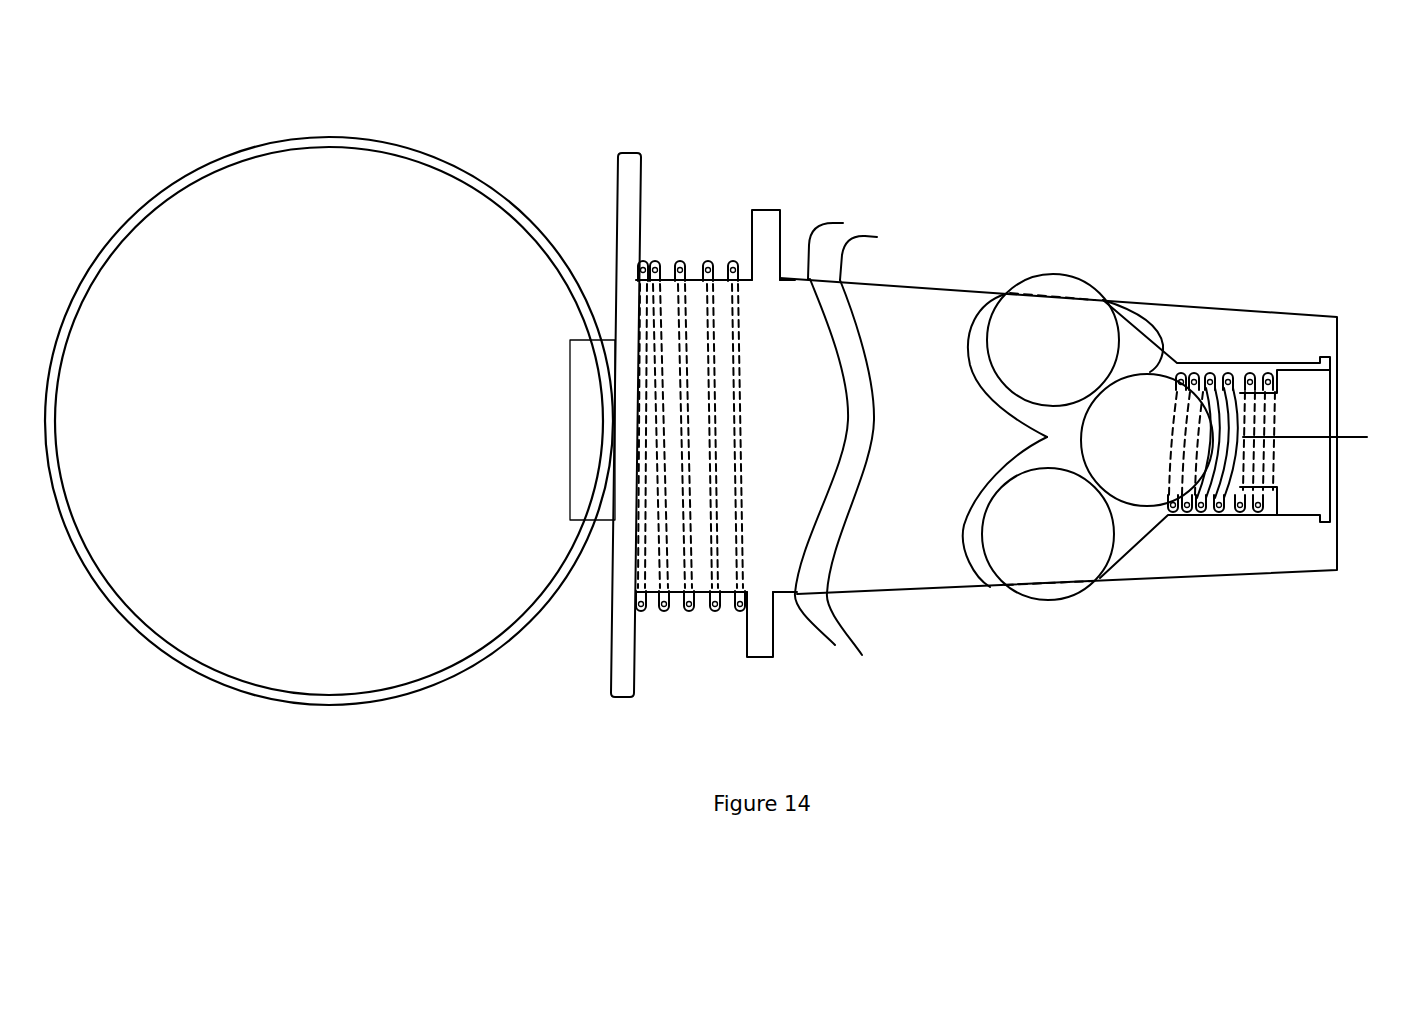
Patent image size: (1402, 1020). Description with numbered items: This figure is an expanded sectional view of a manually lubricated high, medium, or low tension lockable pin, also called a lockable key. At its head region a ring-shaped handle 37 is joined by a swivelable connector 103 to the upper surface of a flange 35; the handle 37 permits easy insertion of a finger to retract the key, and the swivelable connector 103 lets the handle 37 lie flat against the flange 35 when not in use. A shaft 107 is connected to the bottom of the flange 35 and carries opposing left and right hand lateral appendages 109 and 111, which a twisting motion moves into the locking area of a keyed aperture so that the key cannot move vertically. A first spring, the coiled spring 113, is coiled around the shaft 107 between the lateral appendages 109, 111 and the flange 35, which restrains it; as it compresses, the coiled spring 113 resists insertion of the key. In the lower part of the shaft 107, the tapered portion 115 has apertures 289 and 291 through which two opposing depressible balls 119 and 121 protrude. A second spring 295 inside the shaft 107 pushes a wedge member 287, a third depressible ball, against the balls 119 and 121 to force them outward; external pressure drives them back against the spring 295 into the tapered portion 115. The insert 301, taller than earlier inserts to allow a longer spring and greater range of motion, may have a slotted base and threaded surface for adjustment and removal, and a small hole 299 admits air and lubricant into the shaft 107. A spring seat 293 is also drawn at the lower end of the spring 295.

The handle 37 is at (212, 157).
The flange 35 is at (628, 152).
The swivelable connector 103 is at (569, 447).
The coiled spring 113 is at (678, 258).
The right hand lateral appendage 111 is at (766, 210).
The left hand lateral appendage 109 is at (757, 658).
The shaft 107 is at (795, 278).
The aperture 291 is at (972, 318).
The aperture 289 is at (962, 552).
The depressible ball 121 is at (1053, 273).
The depressible ball 119 is at (1044, 602).
The wedge member 287 is at (1160, 352).
The tapered portion 115 is at (1210, 308).
The spring 295 is at (1245, 372).
The spring end 293 is at (1222, 514).
The manually lubricated adjustable high/medium/low tension insert 301 is at (1296, 517).
The small hole 299 is at (1367, 437).